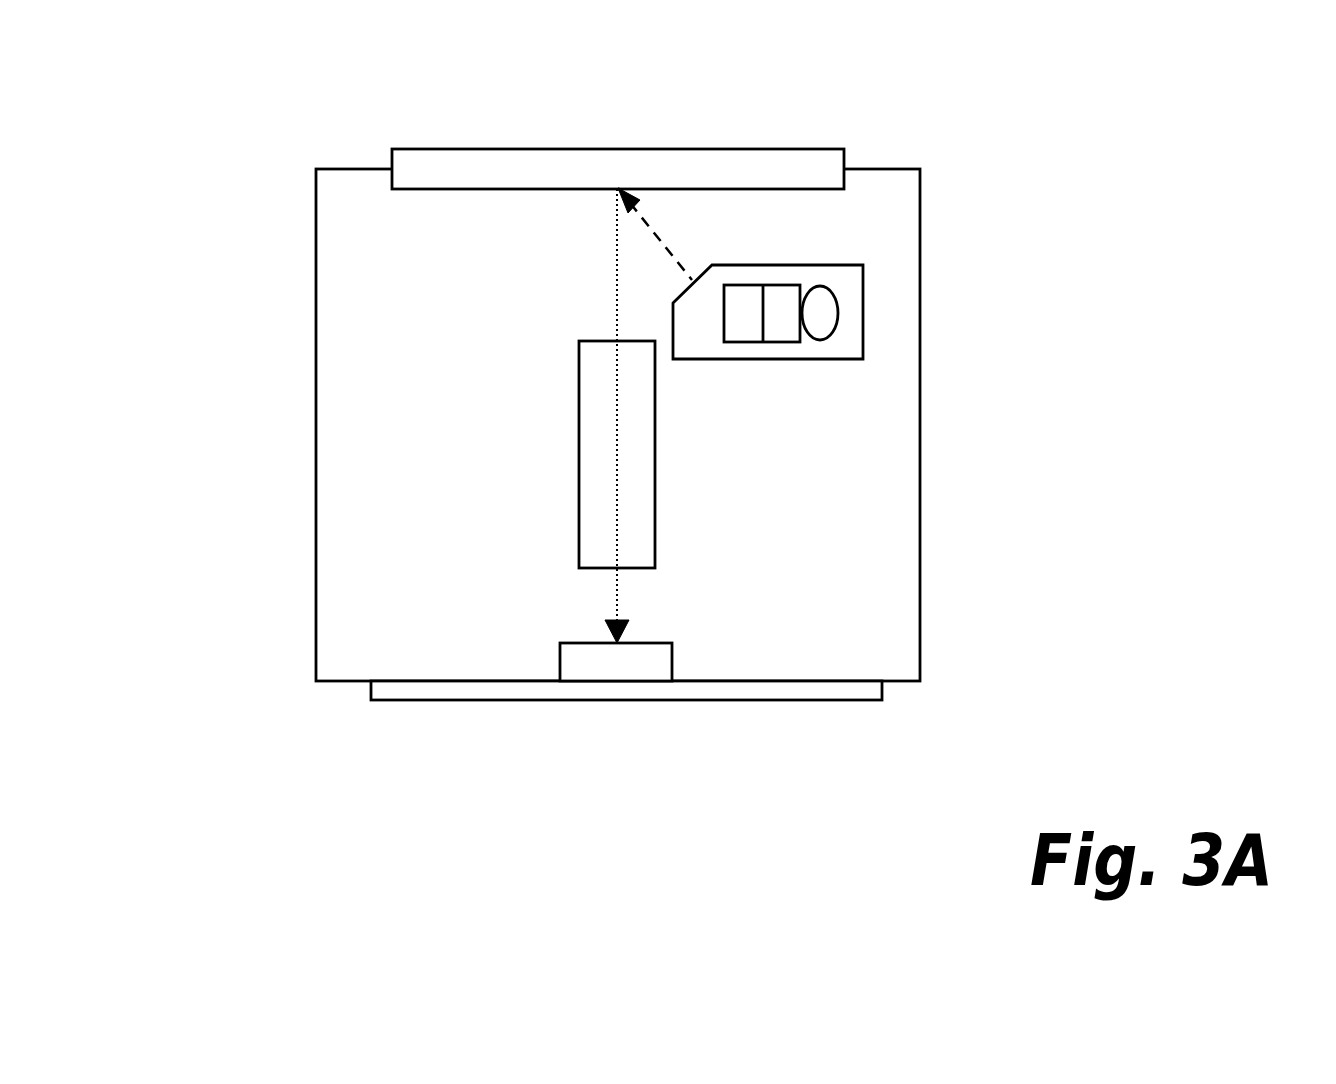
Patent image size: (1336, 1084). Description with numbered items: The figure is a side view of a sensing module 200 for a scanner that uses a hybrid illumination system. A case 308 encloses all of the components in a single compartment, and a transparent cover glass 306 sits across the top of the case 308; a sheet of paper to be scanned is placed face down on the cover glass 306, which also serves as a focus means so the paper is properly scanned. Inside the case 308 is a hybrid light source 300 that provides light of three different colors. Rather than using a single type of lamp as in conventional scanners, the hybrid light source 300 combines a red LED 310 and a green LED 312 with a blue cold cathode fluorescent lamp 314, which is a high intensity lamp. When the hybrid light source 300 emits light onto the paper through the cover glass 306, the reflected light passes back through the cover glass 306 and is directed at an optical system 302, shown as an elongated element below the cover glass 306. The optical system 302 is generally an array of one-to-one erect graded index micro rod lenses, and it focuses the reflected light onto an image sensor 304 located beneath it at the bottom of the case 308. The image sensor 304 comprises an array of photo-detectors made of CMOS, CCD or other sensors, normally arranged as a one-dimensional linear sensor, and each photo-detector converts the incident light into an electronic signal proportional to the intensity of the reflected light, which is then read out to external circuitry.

The sensing module 200 is at (727, 90).
The hybrid light source 300 is at (853, 322).
The optical system 302 is at (592, 358).
The image sensor 304 is at (605, 668).
The cover glass 306 is at (420, 160).
The case 308 is at (332, 453).
The red LED 310 is at (743, 337).
The green LED 312 is at (783, 293).
The blue cold cathode fluorescent lamp 314 is at (825, 332).